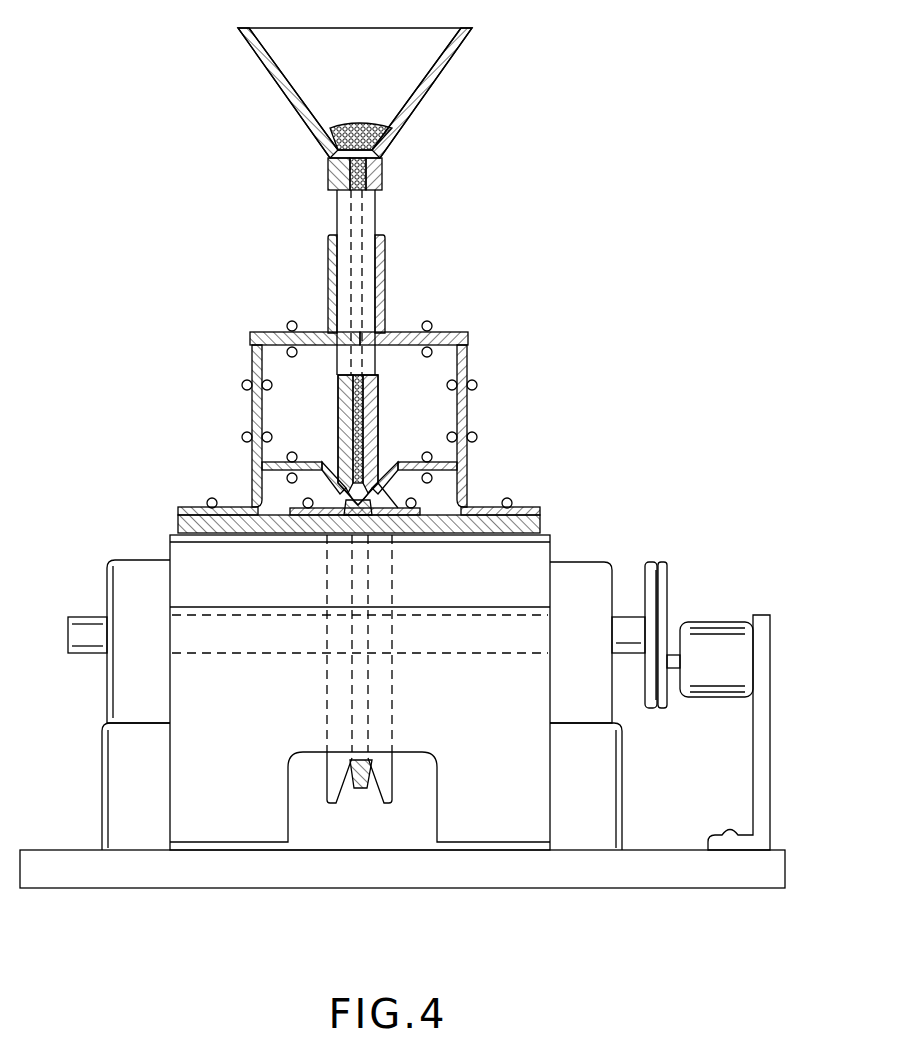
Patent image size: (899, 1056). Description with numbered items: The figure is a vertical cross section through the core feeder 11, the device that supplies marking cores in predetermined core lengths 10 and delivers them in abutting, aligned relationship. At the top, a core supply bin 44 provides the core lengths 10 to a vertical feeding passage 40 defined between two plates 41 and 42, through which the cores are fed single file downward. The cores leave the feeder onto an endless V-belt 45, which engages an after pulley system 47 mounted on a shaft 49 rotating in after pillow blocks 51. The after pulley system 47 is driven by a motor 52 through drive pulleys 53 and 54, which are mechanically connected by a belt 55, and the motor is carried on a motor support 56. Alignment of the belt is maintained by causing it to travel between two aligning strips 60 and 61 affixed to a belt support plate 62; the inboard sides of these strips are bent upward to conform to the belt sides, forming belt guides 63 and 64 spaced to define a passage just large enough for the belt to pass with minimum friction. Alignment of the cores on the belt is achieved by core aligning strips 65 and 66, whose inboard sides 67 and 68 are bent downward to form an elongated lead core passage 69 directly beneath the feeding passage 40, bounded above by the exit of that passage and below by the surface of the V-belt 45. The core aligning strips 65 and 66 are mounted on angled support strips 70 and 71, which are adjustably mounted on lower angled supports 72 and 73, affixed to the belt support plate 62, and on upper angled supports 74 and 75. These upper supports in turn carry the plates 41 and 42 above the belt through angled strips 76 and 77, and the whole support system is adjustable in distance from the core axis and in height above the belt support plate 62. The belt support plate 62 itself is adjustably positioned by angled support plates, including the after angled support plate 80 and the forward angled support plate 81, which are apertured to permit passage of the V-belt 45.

The core lengths 10 is at (405, 131).
The core feeder 11 is at (458, 310).
The vertical feeding passage 40 is at (366, 268).
The plate 41 is at (345, 209).
The plate 42 is at (372, 207).
The core supply bin 44 is at (452, 72).
The endless V-belt 45 is at (364, 515).
The after pulley system 47 is at (390, 775).
The shaft 49 is at (74, 642).
The after pillow blocks 51 is at (105, 780).
The motor 52 is at (722, 622).
The drive pulley 53 is at (670, 703).
The drive pulley 54 is at (666, 568).
The belt 55 is at (657, 597).
The motor support 56 is at (766, 752).
The aligning strip 60 is at (338, 512).
The aligning strip 61 is at (430, 512).
The belt support plate 62 is at (543, 527).
The belt guide 63 is at (350, 513).
The belt guide 64 is at (390, 512).
The core aligning strip 65 is at (258, 470).
The core aligning strip 66 is at (460, 470).
The inboard side 67 is at (340, 470).
The inboard side 68 is at (380, 470).
The elongated lead core passage 69 is at (370, 472).
The angled support strip 70 is at (258, 406).
The angled support strip 71 is at (462, 406).
The lower angled support 72 is at (196, 507).
The lower angled support 73 is at (526, 509).
The upper angled support 74 is at (252, 362).
The upper angled support 75 is at (468, 365).
The angled strip 76 is at (327, 305).
The angled strip 77 is at (385, 305).
The after angled support plate 80 is at (478, 810).
The forward angled support plate 81 is at (470, 600).